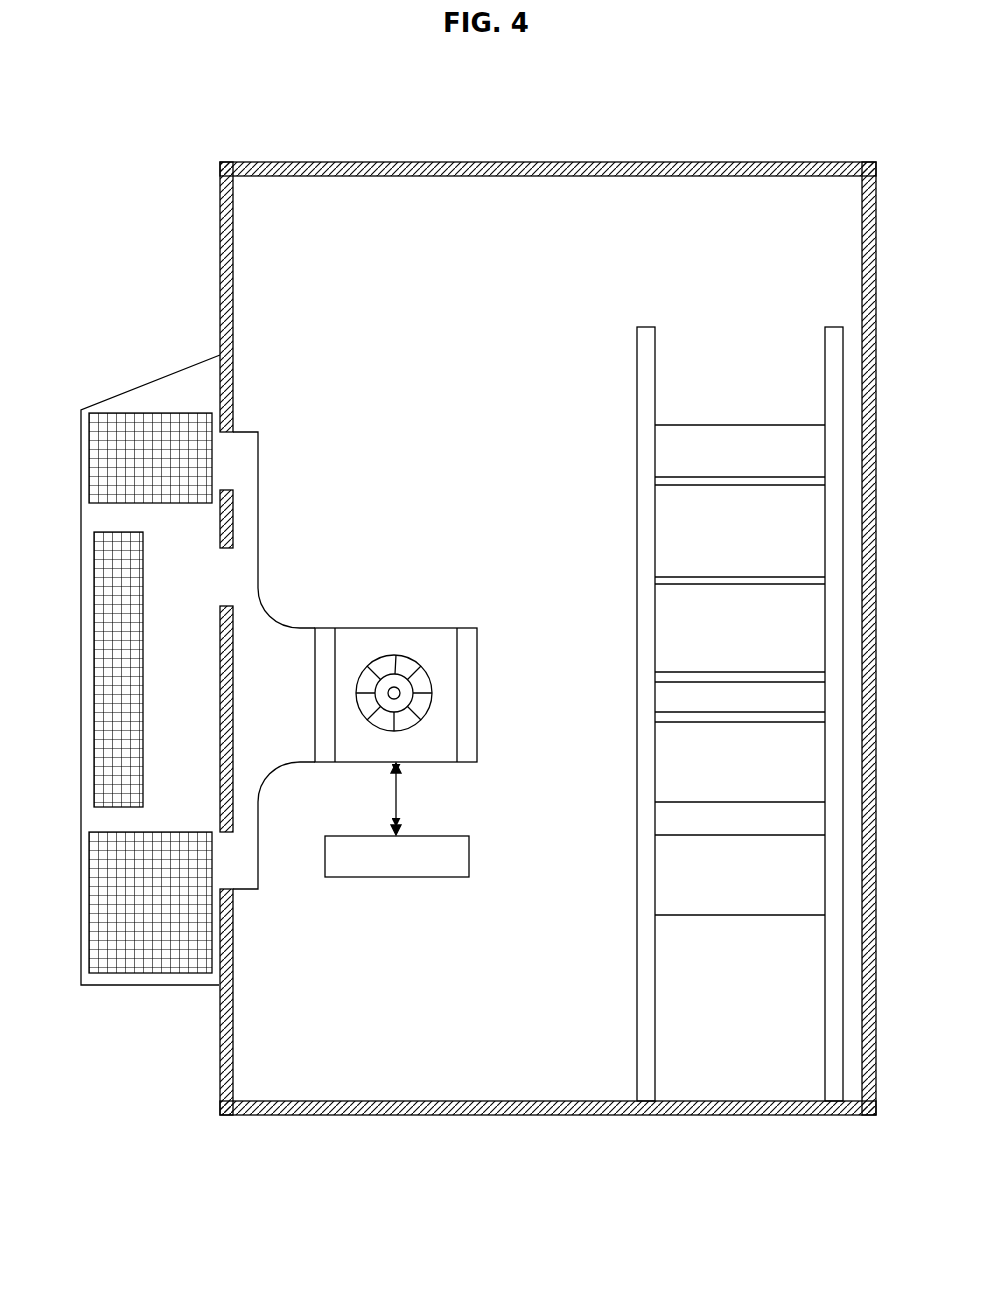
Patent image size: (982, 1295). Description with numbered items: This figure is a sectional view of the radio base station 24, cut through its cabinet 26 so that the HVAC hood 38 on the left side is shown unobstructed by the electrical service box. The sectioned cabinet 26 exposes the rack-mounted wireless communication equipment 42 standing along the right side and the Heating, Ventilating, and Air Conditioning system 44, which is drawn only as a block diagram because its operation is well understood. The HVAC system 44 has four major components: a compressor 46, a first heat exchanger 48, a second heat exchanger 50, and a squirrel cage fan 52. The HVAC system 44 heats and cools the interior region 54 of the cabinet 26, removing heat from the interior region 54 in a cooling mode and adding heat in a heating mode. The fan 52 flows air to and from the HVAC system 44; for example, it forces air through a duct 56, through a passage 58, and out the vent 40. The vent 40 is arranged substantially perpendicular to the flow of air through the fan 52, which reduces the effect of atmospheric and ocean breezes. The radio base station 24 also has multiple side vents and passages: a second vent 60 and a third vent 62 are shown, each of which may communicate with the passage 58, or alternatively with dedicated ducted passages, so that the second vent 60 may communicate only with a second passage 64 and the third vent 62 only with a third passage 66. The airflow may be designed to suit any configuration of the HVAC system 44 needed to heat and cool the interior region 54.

The radio base station 24 is at (157, 144).
The cabinet 26 is at (702, 162).
The HVAC hood 38 is at (172, 386).
The vent 40 is at (110, 458).
The rack-mounted wireless communication equipment 42 is at (643, 370).
The Heating, Ventilating, and Air Conditioning (HVAC) system 44 is at (498, 630).
The compressor 46 is at (430, 877).
The first heat exchanger 48 is at (465, 632).
The second heat exchanger 50 is at (323, 632).
The squirrel cage fan 52 is at (394, 660).
The interior region 54 is at (522, 224).
The duct 56 is at (278, 608).
The passage 58 is at (250, 467).
The second vent 60 is at (110, 580).
The third vent 62 is at (112, 888).
The second passage 64 is at (247, 571).
The third passage 66 is at (249, 866).